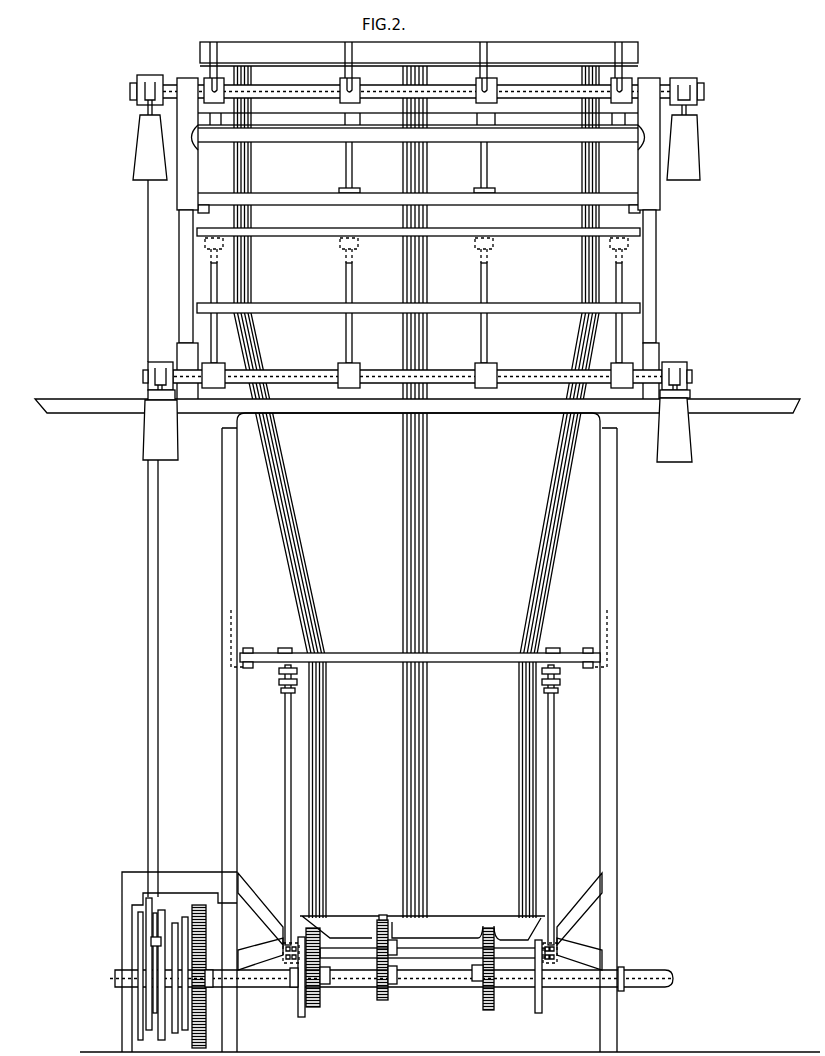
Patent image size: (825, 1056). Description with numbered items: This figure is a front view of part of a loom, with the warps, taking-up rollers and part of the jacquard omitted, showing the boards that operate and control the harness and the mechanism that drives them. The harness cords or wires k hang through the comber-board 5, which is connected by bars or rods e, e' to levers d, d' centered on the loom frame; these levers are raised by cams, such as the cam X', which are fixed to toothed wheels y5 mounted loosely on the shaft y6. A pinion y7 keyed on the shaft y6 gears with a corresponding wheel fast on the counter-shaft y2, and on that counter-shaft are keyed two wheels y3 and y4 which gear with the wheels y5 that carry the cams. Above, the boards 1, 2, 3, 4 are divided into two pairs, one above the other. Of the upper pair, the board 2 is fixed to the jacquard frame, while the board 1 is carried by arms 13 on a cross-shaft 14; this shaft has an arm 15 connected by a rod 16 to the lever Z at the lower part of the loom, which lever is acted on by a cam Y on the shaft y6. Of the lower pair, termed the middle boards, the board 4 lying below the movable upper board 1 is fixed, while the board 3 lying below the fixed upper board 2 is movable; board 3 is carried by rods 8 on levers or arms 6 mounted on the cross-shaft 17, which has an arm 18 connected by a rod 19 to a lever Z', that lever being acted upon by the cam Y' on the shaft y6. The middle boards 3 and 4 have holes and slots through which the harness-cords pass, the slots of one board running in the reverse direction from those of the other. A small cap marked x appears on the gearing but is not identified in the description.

The movable upper board 1 is at (419, 52).
The fixed upper board 2 is at (418, 112).
The movable middle board 3 is at (418, 225).
The fixed middle board 4 is at (418, 198).
The comber-board 5 is at (419, 639).
The levers or arms 6 is at (417, 370).
The rods 8 is at (416, 300).
The arms 13 is at (641, 70).
The cross-shaft 14 is at (577, 107).
The arm 15 is at (417, 119).
The rod 16 is at (136, 538).
The cross-shaft 17 is at (420, 372).
The arm 18 is at (417, 405).
The rod 19 is at (169, 678).
The harness cords or wires k is at (416, 492).
The bar or rod e is at (286, 805).
The bar or rod e' is at (554, 805).
The lever d is at (273, 974).
The lever d' is at (558, 961).
The cam X' is at (411, 986).
The cap x is at (388, 924).
The counter-shaft y2 is at (432, 958).
The wheel y3 is at (334, 938).
The wheel y4 is at (490, 940).
The toothed wheels y5 is at (401, 981).
The shaft y6 is at (401, 979).
The pinion y7 is at (392, 963).
The lever Z is at (146, 969).
The lever Z' is at (162, 955).
The cam Y is at (146, 984).
The cam Y' is at (173, 989).